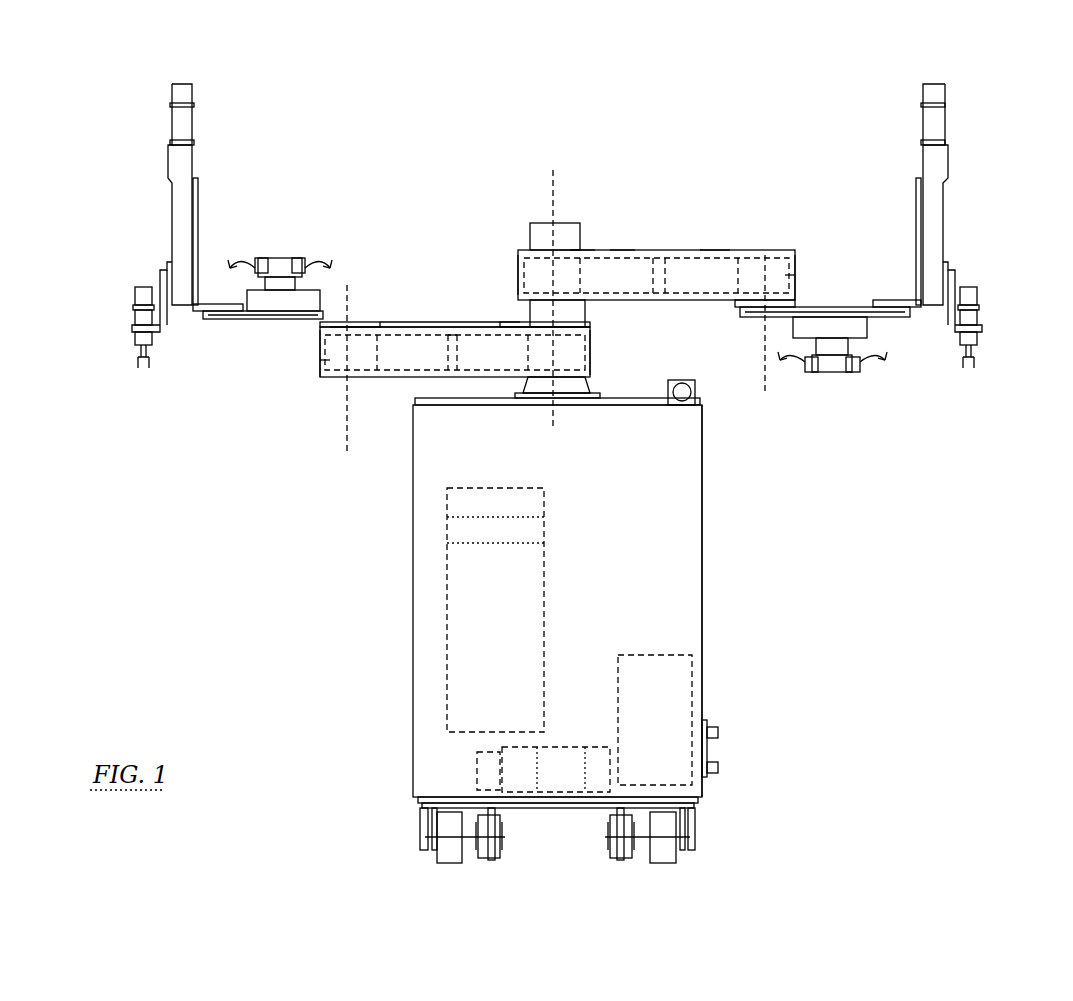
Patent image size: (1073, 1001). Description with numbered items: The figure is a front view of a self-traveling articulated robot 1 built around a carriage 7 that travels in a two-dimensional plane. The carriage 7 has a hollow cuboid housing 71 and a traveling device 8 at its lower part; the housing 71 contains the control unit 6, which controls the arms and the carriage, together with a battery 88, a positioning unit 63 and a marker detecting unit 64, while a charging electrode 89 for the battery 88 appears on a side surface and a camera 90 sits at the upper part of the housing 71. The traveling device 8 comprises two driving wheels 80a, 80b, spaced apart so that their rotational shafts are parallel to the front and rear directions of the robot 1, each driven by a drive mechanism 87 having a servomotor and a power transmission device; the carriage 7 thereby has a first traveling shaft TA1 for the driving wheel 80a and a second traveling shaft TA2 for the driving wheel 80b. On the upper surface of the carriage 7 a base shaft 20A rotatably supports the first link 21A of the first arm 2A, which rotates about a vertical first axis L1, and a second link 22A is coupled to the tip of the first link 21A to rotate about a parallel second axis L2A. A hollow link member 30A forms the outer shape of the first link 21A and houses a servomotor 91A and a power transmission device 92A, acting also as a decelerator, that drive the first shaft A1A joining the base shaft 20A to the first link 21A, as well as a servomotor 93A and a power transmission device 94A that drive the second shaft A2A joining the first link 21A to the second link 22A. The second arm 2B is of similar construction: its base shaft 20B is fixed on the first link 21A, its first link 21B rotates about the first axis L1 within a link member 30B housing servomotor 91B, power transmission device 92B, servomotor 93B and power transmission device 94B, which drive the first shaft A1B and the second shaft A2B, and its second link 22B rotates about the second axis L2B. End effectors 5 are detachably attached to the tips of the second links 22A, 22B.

The self-traveling articulated robot 1 is at (522, 118).
The first arm 2A is at (293, 212).
The second arm 2B is at (750, 212).
The end effector 5 is at (118, 240).
The control unit 6 is at (447, 638).
The carriage 7 is at (703, 522).
The housing 71 is at (703, 577).
The traveling device 8 is at (548, 836).
The driving wheel 80a is at (690, 830).
The driving wheel 80b is at (425, 830).
The first traveling shaft TA1 is at (605, 838).
The second traveling shaft TA2 is at (505, 840).
The base shaft 20A is at (592, 382).
The base shaft 20B is at (586, 313).
The first link 21A is at (390, 378).
The first link 21B is at (690, 248).
The second link 22A is at (248, 318).
The second link 22B is at (890, 320).
The link member 30A is at (397, 326).
The link member 30B is at (795, 250).
The positioning unit 63 is at (447, 516).
The marker detecting unit 64 is at (447, 543).
The drive mechanism 87 is at (465, 768).
The battery 88 is at (693, 660).
The charging electrode 89 is at (720, 725).
The camera 90 is at (700, 398).
The servomotor 91A is at (466, 326).
The servomotor 91B is at (622, 248).
The power transmission device 92A is at (521, 326).
The power transmission device 92B is at (582, 248).
The servomotor 93A is at (412, 328).
The servomotor 93B is at (716, 248).
The power transmission device 94A is at (322, 378).
The power transmission device 94B is at (800, 278).
The first shaft A1A is at (595, 356).
The first shaft A1B is at (519, 246).
The second shaft A2A is at (313, 355).
The second shaft A2B is at (798, 273).
The first axis L1 is at (550, 289).
The second axis L2A is at (352, 384).
The second axis L2B is at (766, 334).